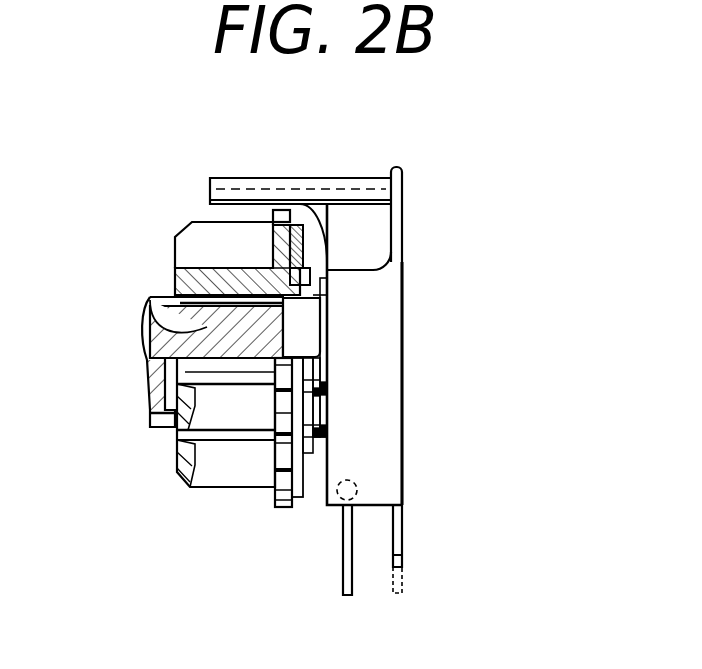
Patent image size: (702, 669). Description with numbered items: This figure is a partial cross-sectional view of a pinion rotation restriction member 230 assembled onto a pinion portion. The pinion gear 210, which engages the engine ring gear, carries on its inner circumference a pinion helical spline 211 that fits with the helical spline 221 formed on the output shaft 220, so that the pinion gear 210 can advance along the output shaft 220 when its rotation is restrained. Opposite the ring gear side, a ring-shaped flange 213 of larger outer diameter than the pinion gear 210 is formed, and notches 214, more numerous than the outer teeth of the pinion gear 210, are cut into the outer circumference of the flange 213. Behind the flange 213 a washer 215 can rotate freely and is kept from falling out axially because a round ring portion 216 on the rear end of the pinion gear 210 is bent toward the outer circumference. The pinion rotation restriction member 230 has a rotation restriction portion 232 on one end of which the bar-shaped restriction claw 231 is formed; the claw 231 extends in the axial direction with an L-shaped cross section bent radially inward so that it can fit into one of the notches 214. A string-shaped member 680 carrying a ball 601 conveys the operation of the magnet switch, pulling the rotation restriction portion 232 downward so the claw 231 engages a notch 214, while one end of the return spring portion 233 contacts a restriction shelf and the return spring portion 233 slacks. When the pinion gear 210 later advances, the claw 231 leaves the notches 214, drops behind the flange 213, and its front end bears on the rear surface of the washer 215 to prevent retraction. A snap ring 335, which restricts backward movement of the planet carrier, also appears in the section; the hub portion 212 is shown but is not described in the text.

The pinion rotation restriction member 230 is at (424, 306).
The restriction claw 231 is at (231, 178).
The rotation restriction portion 232 is at (378, 446).
The return spring portion 233 is at (395, 540).
The hub 212 is at (195, 247).
The notches 214 is at (283, 210).
The washer 215 is at (297, 222).
The round ring portion 216 is at (322, 292).
The snap ring 335 is at (333, 292).
The helical spline 221 is at (160, 302).
The pinion helical spline 211 is at (158, 350).
The output shaft 220 is at (150, 389).
The pinion gear 210 is at (240, 468).
The flange 213 is at (283, 512).
The string-shaped member 680 is at (343, 565).
The ball 601 is at (340, 500).